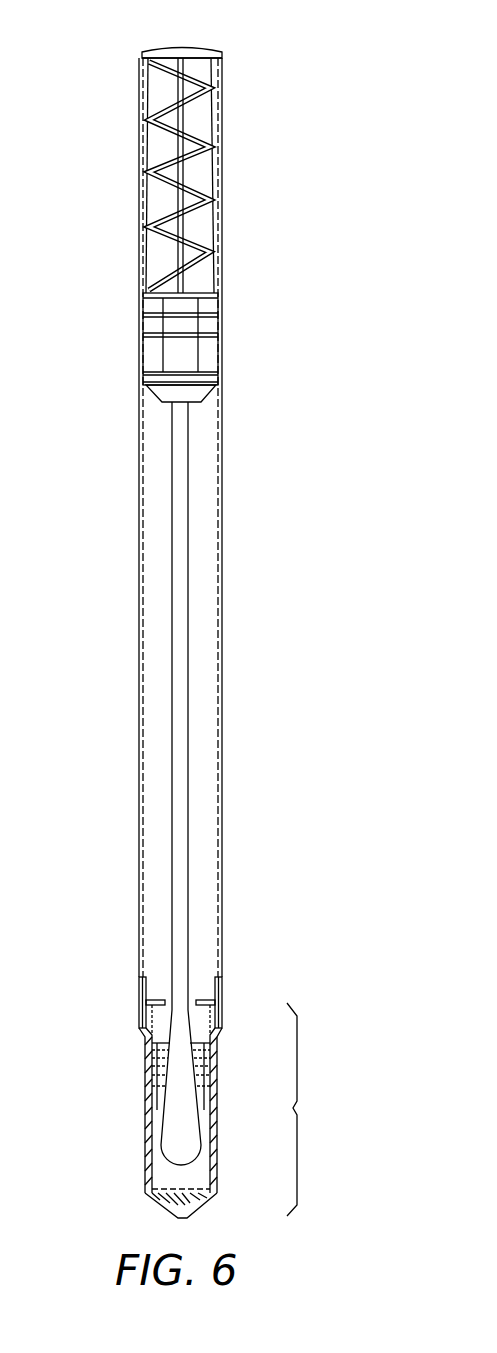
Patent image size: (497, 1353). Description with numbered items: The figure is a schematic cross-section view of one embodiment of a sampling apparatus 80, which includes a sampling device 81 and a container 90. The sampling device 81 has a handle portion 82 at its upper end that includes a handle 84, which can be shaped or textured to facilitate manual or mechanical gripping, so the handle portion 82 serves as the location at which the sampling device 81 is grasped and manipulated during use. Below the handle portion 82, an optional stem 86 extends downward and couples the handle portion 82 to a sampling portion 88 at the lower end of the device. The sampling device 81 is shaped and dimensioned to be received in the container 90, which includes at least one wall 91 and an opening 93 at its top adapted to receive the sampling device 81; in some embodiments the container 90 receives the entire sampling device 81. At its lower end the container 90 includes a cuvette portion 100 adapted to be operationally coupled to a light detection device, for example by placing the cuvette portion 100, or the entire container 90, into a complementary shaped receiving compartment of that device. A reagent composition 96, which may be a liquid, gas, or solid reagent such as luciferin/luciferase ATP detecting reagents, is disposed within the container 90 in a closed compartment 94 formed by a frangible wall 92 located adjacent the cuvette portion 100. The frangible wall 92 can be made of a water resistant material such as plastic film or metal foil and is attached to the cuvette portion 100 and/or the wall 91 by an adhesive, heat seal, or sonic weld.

The sampling apparatus 80 is at (241, 78).
The sampling device 81 is at (120, 130).
The handle portion 82 is at (152, 47).
The handle 84 is at (190, 170).
The stem 86 is at (190, 452).
The sampling portion 88 is at (204, 1078).
The container 90 is at (248, 607).
The wall 91 is at (140, 575).
The frangible wall 92 is at (213, 1017).
The opening 93 is at (136, 92).
The closed compartment 94 is at (160, 1027).
The reagent composition 96 is at (192, 1172).
The cuvette portion 100 is at (246, 1110).